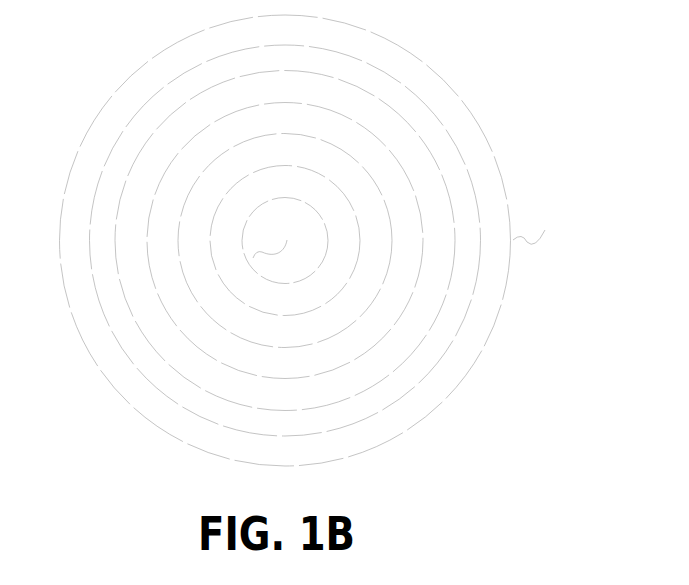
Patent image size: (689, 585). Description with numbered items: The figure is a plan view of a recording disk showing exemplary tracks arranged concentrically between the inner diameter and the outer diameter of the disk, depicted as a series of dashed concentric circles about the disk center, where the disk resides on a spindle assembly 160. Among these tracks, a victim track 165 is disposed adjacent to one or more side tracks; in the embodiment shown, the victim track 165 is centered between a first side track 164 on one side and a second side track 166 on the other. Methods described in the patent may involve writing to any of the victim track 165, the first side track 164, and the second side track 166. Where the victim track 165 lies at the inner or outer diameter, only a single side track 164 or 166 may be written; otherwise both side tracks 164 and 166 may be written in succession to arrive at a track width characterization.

The spindle assembly 160 is at (321, 258).
The first side track 164 is at (400, 399).
The victim track 165 is at (408, 360).
The second side track 166 is at (302, 378).